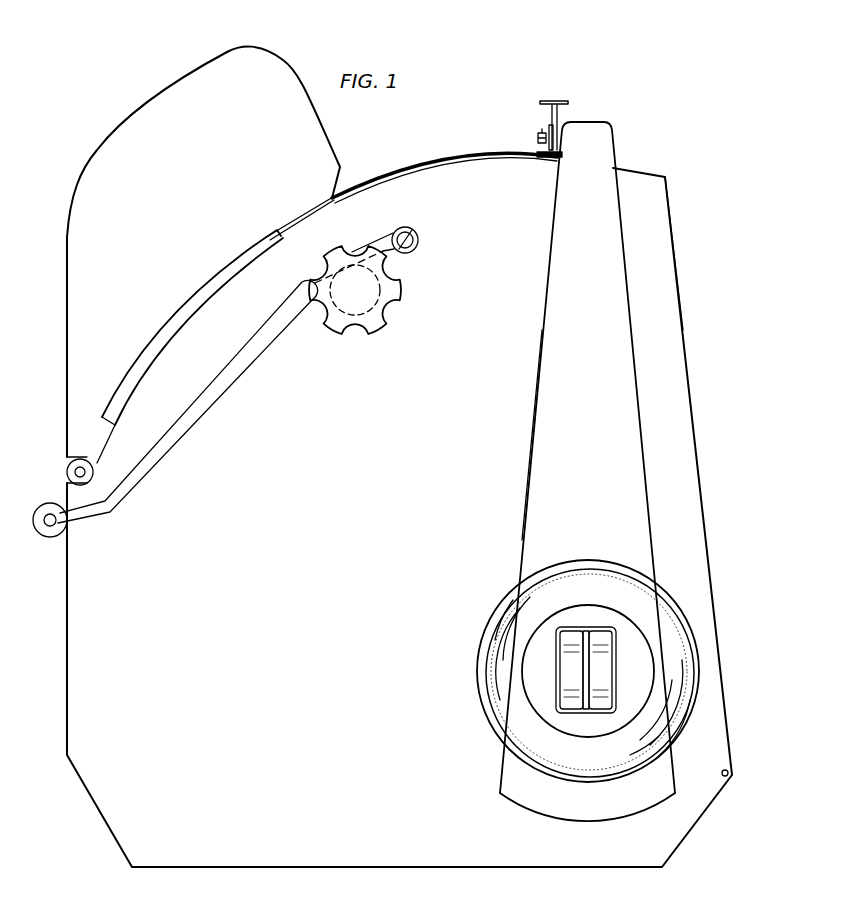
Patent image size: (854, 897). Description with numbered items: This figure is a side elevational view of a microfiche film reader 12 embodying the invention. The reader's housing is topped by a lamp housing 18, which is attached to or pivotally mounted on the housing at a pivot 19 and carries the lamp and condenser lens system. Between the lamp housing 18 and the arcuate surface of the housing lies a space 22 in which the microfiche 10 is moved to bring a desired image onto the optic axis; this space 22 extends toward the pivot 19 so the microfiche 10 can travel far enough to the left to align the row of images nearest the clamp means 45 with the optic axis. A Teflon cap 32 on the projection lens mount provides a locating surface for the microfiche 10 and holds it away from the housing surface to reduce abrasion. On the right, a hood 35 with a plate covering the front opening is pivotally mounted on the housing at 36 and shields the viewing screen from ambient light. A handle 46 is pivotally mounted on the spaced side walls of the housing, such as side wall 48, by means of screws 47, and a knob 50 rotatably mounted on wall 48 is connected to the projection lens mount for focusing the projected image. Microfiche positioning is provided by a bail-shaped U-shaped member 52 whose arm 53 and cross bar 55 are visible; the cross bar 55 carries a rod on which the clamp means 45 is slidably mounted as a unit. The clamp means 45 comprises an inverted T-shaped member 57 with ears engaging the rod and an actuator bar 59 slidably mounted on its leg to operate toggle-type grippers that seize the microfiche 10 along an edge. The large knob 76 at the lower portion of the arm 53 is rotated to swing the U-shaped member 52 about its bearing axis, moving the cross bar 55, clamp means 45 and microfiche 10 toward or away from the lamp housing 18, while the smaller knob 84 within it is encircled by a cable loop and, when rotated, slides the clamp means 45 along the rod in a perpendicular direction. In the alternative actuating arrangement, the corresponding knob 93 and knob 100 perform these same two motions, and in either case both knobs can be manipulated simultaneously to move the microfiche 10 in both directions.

The microfiche 10 is at (428, 163).
The film reader 12 is at (710, 436).
The lamp housing 18 is at (98, 153).
The pivot 19 is at (67, 468).
The space 22 is at (158, 347).
The cap 32 is at (336, 195).
The hood 35 is at (687, 287).
The hood pivot 36 is at (727, 776).
The clamp means 45 is at (572, 100).
The handle 46 is at (45, 538).
The screws 47 is at (418, 234).
The side wall 48 is at (328, 532).
The knob 50 is at (410, 291).
The U-shaped member 52 is at (524, 430).
The arm 53 is at (598, 382).
The cross bar 55 is at (594, 121).
The inverted T-shaped member 57 is at (543, 158).
The actuator bar 59 is at (545, 100).
The knob 76 is at (477, 662).
The knob 84 is at (562, 700).
The knob 93 is at (550, 672).
The knob 100 is at (512, 703).